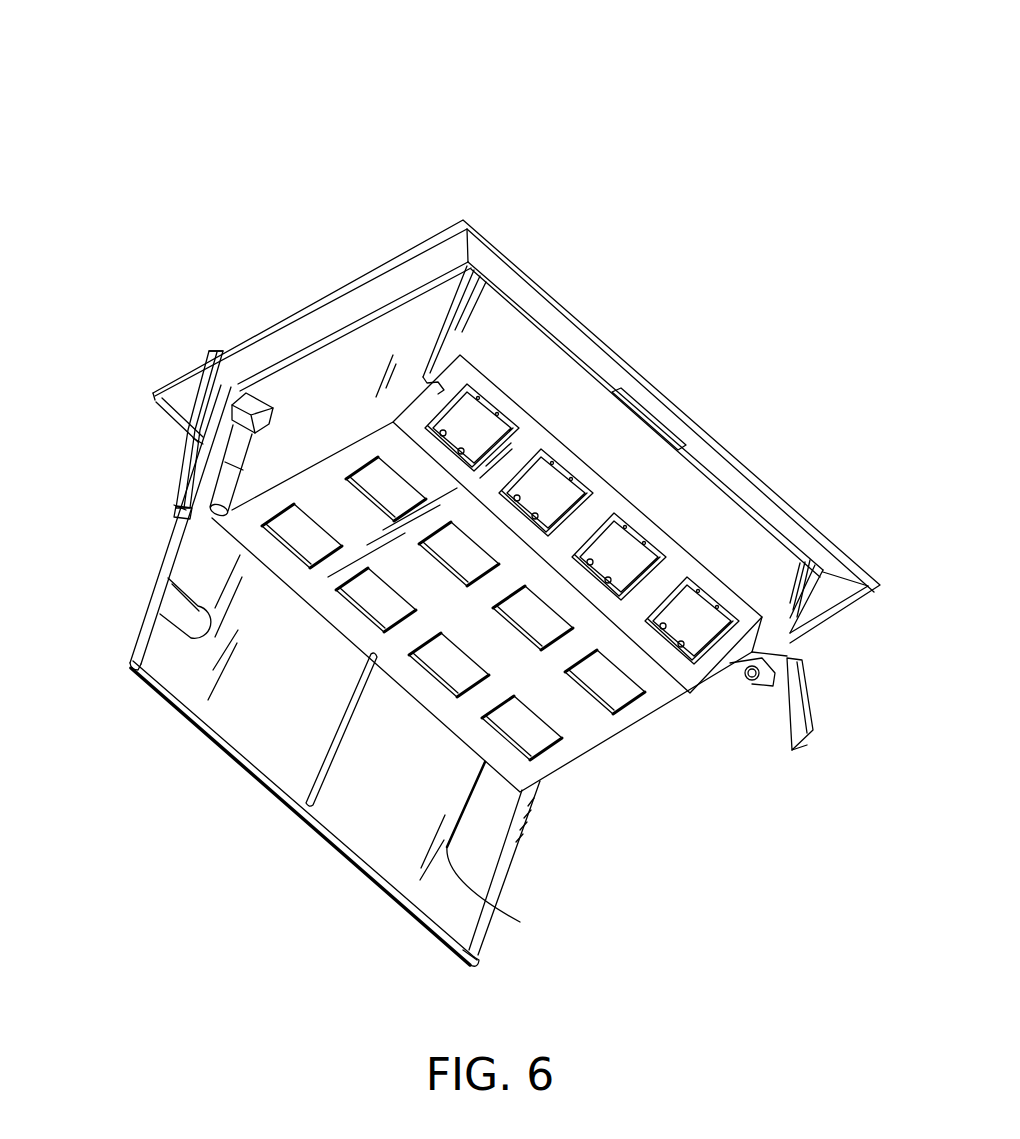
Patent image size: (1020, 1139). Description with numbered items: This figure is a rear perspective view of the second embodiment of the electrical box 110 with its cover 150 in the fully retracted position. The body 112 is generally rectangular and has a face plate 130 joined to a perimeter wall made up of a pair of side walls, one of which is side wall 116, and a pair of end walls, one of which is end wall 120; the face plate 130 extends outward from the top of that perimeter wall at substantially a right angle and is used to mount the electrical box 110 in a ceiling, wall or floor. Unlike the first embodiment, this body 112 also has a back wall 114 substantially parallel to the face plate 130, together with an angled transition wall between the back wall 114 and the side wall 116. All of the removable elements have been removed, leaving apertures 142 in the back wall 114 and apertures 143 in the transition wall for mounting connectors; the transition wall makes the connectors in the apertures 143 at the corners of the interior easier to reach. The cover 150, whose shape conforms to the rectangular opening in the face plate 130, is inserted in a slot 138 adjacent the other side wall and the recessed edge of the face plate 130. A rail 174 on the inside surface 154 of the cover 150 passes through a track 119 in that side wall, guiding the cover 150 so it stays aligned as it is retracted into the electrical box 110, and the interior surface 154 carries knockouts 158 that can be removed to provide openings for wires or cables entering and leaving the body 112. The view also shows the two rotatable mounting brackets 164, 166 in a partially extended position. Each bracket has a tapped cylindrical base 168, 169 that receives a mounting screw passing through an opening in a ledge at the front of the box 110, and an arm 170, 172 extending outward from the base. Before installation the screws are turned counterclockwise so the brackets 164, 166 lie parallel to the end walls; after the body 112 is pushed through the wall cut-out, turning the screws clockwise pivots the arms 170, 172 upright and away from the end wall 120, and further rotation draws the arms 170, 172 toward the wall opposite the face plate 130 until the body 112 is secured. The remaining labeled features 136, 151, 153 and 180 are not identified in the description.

The electrical box 110 is at (362, 160).
The body 112 is at (591, 204).
The back wall 114 is at (592, 733).
The side wall 116 is at (693, 522).
The track 119 is at (371, 660).
The end wall 120 is at (403, 355).
The face plate 130 is at (594, 327).
The latch 136 is at (645, 422).
The slot 138 is at (178, 508).
The apertures 142 is at (453, 608).
The apertures 143 is at (582, 524).
The cover 150 is at (158, 762).
The front wall of base 151 is at (130, 660).
The corner of base 153 is at (478, 968).
The inside surface of the cover 154 is at (285, 667).
The knockouts 158 is at (183, 617).
The rotatable mounting bracket 164 is at (807, 745).
The rotatable mounting bracket 166 is at (212, 366).
The tapped cylindrical base 168 is at (250, 452).
The tapped cylindrical base 169 is at (750, 685).
The arm 170 is at (208, 350).
The arm 172 is at (812, 703).
The rail 174 is at (340, 851).
The hinge edge 180 is at (197, 440).